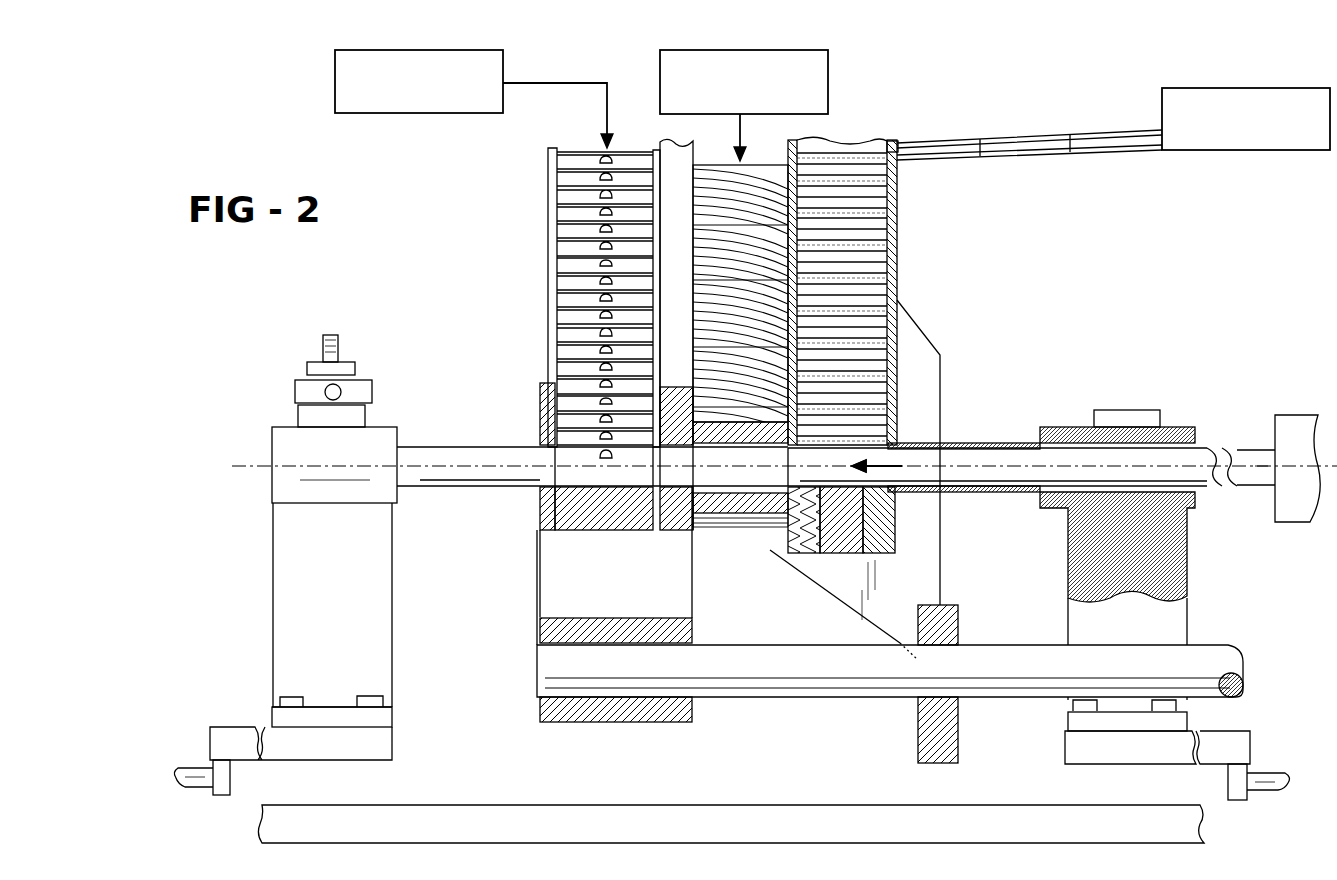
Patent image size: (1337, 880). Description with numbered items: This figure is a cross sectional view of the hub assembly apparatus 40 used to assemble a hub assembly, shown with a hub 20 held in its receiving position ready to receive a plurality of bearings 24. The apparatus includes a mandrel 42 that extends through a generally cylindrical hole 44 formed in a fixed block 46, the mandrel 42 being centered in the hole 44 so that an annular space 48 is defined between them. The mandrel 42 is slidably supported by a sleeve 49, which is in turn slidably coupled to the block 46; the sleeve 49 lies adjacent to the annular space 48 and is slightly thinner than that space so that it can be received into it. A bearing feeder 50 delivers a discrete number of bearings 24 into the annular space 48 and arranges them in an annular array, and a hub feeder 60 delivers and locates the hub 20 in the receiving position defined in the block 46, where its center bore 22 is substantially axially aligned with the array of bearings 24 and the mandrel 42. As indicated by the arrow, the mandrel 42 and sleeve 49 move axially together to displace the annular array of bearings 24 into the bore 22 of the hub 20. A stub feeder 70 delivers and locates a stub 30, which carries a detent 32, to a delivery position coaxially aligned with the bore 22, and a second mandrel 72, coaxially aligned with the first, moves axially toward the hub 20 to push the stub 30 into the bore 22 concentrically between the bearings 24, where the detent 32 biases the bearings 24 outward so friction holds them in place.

The hub 20 is at (767, 170).
The center bore 22 is at (722, 498).
The bearings 24 is at (1022, 140).
The stub 30 is at (597, 158).
The detent 32 is at (606, 460).
The hub assembly apparatus 40 is at (403, 283).
The mandrel 42 is at (1206, 460).
The cylindrical hole 44 is at (870, 520).
The fixed block 46 is at (810, 555).
The annular space 48 is at (790, 533).
The sleeve 49 is at (1007, 443).
The bearing feeder 50 is at (1165, 108).
The hub feeder 60 is at (822, 72).
The stub feeder 70 is at (345, 92).
The second mandrel 72 is at (418, 460).